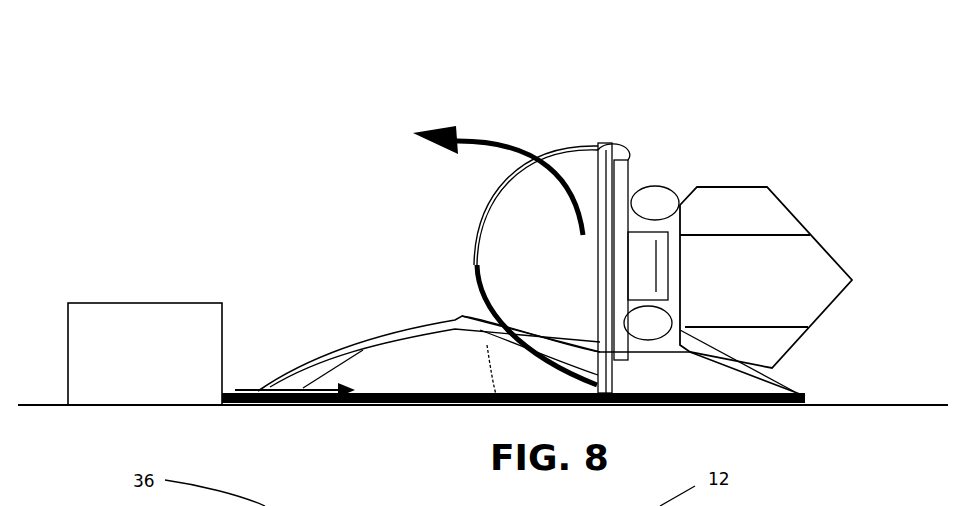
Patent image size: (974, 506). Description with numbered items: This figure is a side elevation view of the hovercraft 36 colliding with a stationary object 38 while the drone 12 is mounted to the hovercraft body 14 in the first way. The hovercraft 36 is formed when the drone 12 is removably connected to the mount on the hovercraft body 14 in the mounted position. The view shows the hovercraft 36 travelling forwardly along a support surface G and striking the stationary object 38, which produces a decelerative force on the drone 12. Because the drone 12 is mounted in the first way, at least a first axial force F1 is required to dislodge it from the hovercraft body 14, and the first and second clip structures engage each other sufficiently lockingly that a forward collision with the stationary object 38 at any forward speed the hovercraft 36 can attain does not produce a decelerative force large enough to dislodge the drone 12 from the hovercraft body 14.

The drone 12 is at (622, 143).
The hovercraft body 14 is at (406, 330).
The hovercraft 36 is at (330, 160).
The stationary object 38 is at (131, 303).
The first axial force F1 is at (283, 390).
The ground surface G is at (891, 404).